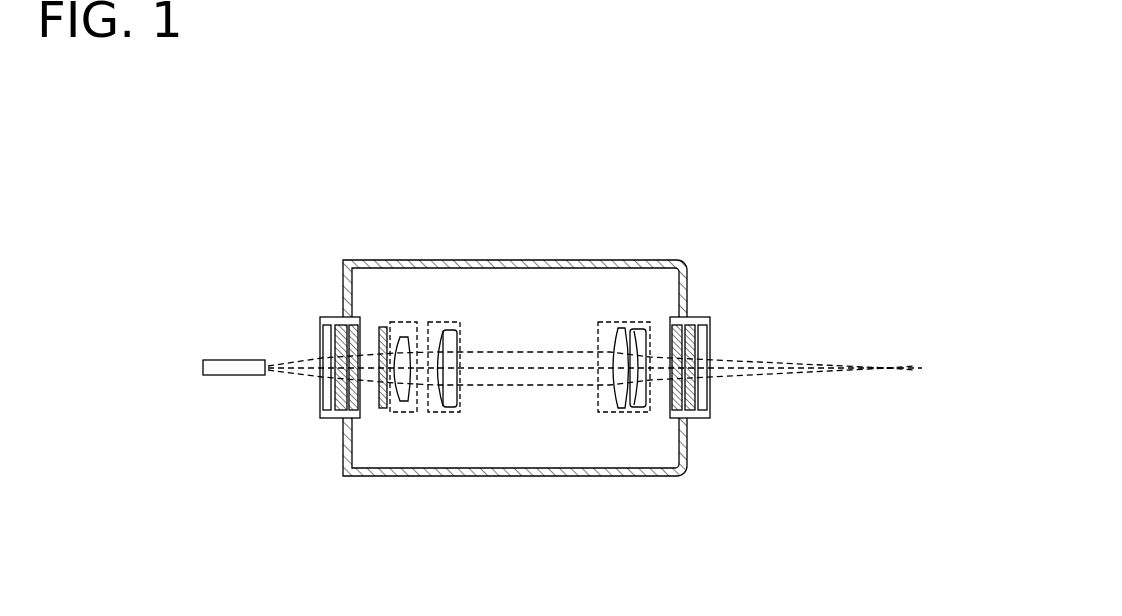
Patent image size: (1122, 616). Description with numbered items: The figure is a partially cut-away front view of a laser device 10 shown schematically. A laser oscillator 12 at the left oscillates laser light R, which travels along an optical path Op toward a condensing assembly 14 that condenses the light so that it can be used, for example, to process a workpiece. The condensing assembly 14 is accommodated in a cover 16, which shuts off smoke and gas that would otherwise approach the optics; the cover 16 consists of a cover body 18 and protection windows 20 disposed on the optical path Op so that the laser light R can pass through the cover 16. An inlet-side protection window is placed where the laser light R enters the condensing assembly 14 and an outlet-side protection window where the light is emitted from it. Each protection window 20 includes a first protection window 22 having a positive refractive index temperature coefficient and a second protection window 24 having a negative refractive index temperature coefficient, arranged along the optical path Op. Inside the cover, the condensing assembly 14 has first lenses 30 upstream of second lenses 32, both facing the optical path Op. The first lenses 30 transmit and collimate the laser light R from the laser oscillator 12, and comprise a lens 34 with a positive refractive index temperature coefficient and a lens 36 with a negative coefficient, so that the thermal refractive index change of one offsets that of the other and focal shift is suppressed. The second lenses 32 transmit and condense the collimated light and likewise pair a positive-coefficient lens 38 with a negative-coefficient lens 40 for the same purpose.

The laser device 10 is at (553, 107).
The laser oscillator 12 is at (238, 360).
The laser light R is at (305, 358).
The condensing assembly 14 is at (512, 302).
The cover 16 is at (383, 258).
The cover body 18 is at (440, 267).
The protection window 20 is at (501, 351).
The first protection window 22 is at (320, 391).
The second protection window 24 is at (355, 412).
The first lenses 30 is at (423, 316).
The second lenses 32 is at (623, 374).
The lens 34 is at (389, 410).
The lens 36 is at (446, 412).
The lens 38 is at (617, 412).
The lens 40 is at (637, 412).
The optical path Op is at (524, 370).